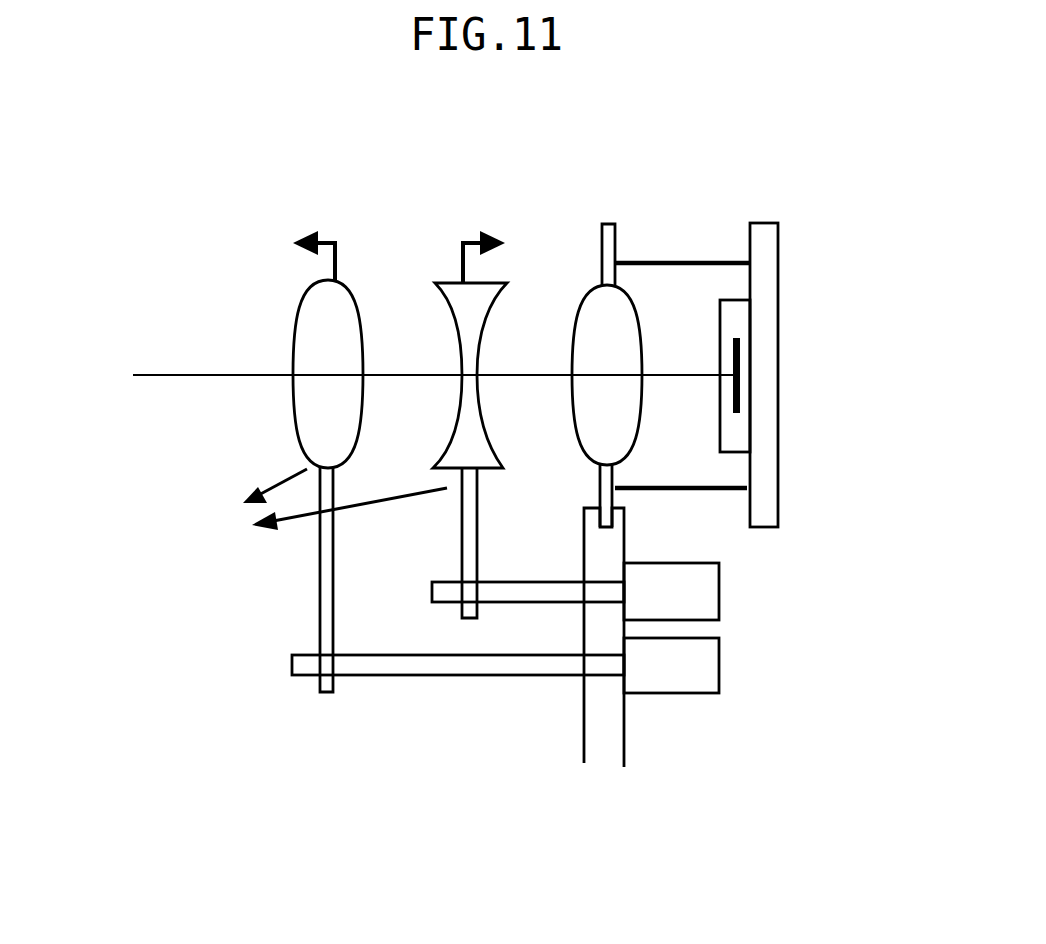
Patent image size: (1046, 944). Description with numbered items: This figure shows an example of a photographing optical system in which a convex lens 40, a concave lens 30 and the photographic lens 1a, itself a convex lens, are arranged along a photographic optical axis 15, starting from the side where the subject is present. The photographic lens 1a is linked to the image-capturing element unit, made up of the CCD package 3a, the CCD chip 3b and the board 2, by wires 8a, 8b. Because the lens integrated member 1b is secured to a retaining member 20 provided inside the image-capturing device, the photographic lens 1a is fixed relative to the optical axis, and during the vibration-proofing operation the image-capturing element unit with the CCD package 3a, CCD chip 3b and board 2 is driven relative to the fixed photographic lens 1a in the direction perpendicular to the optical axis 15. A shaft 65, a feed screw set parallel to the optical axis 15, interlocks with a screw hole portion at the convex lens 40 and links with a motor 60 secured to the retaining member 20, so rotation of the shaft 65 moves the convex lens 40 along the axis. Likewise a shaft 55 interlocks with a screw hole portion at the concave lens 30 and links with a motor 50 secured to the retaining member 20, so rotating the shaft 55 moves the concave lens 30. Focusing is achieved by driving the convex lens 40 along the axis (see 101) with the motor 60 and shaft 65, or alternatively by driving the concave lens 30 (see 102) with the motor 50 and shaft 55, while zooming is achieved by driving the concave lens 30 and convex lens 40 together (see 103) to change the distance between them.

The photographic lens 1a is at (587, 298).
The lens integrated member 1b is at (560, 492).
The board 2 is at (763, 282).
The CCD package 3a is at (735, 433).
The CCD chip 3b is at (740, 357).
The wire 8a is at (709, 261).
The wire 8b is at (693, 493).
The photographic optical axis 15 is at (173, 375).
The retaining member 20 is at (595, 748).
The concave lens 30 is at (452, 318).
The convex lens 40 is at (307, 318).
The motor 50 is at (719, 600).
The shaft 55 is at (445, 582).
The motor 60 is at (660, 693).
The shaft 65 is at (360, 677).
The focusing movement of convex lens 101 is at (307, 233).
The focusing movement of concave lens 102 is at (476, 235).
The zooming movement of both lenses 103 is at (317, 506).